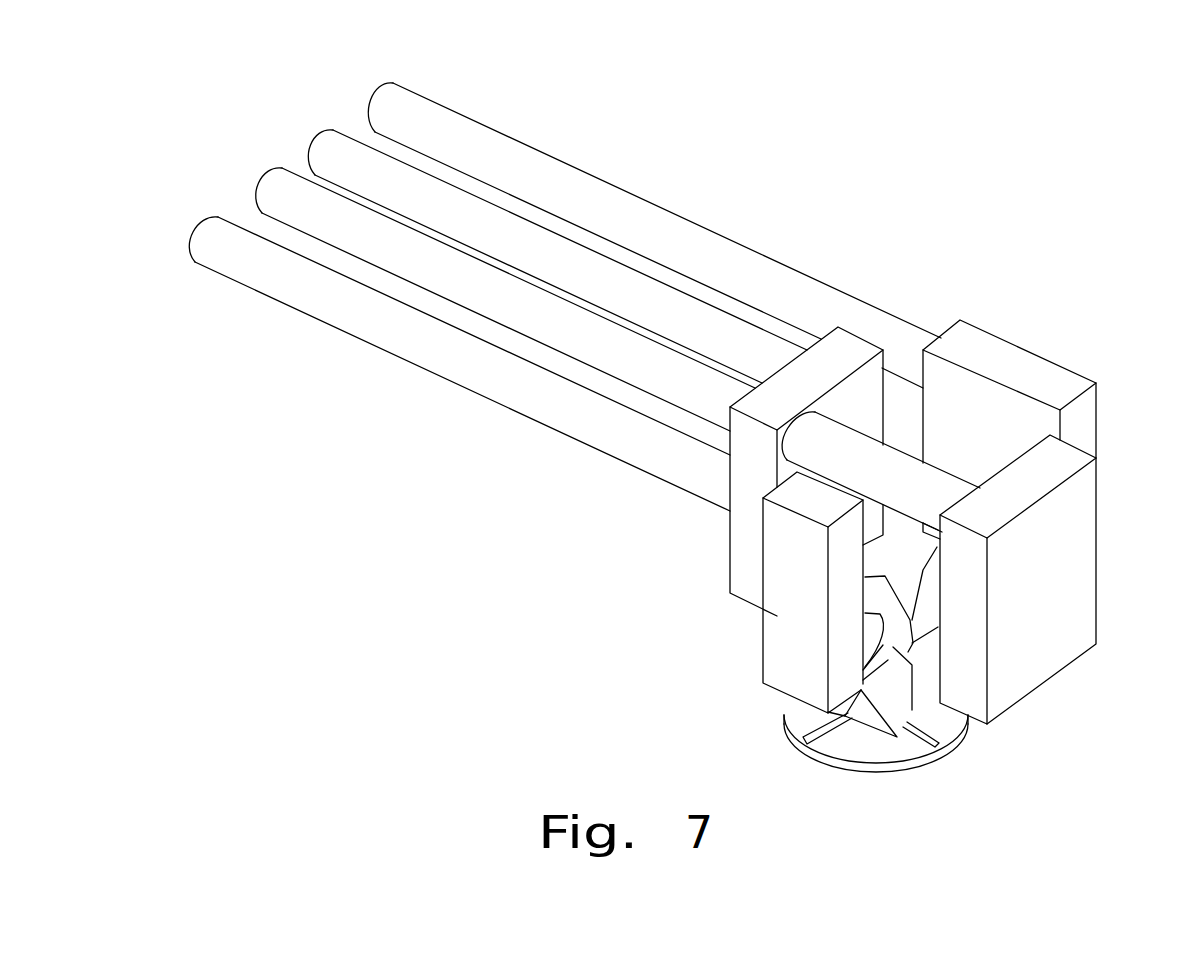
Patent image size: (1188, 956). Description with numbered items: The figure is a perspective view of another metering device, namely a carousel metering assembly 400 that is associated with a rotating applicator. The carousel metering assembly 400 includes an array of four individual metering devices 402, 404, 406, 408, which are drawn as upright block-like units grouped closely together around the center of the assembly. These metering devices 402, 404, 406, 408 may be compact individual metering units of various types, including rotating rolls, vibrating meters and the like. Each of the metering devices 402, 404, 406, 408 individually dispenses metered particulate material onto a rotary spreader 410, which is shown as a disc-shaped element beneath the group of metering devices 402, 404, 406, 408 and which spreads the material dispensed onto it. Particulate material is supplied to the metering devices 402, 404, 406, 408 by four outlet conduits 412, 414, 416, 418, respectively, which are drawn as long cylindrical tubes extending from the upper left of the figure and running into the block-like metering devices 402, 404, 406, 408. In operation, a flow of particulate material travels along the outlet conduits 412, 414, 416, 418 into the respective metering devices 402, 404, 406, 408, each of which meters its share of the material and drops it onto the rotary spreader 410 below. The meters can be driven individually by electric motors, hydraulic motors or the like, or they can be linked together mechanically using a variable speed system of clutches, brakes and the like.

The carousel metering assembly 400 is at (943, 258).
The metering device 402 is at (738, 565).
The metering device 404 is at (770, 657).
The metering device 406 is at (1080, 605).
The metering device 408 is at (1050, 373).
The rotary spreader 410 is at (940, 732).
The outlet conduit 412 is at (330, 140).
The outlet conduit 414 is at (220, 270).
The outlet conduit 416 is at (275, 183).
The outlet conduit 418 is at (445, 113).